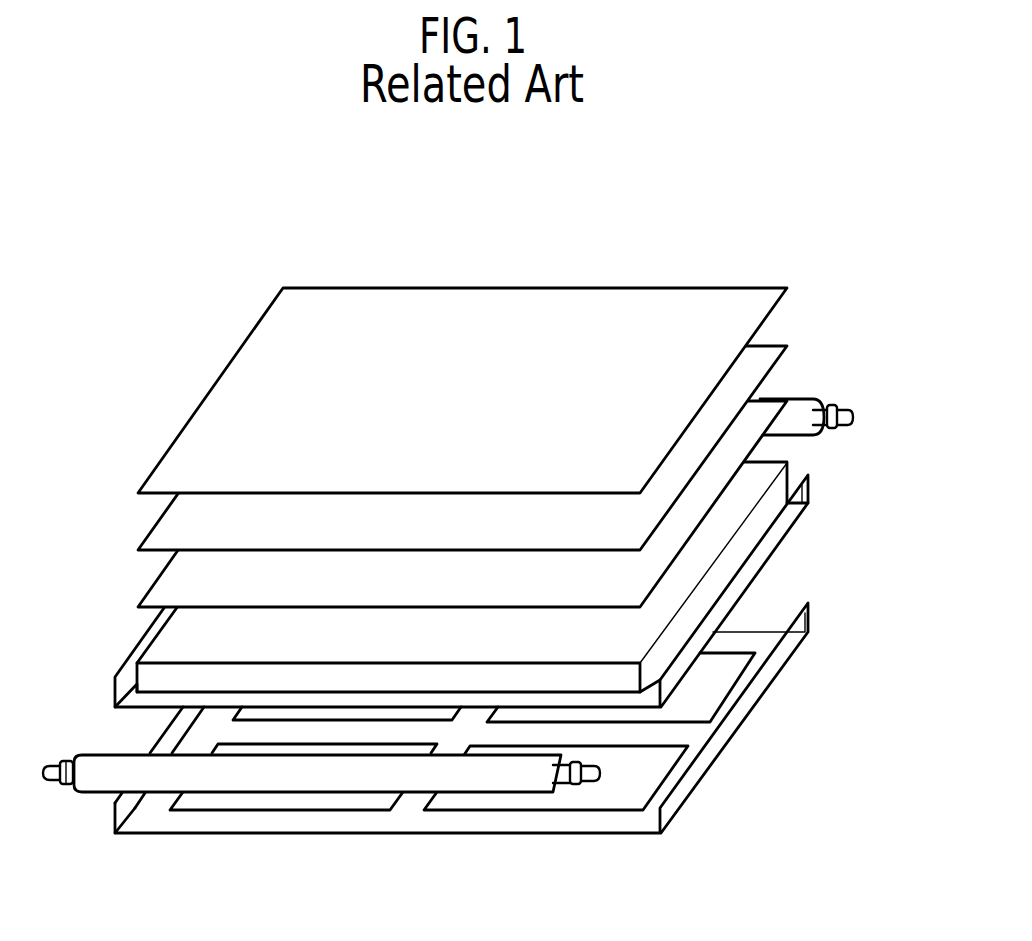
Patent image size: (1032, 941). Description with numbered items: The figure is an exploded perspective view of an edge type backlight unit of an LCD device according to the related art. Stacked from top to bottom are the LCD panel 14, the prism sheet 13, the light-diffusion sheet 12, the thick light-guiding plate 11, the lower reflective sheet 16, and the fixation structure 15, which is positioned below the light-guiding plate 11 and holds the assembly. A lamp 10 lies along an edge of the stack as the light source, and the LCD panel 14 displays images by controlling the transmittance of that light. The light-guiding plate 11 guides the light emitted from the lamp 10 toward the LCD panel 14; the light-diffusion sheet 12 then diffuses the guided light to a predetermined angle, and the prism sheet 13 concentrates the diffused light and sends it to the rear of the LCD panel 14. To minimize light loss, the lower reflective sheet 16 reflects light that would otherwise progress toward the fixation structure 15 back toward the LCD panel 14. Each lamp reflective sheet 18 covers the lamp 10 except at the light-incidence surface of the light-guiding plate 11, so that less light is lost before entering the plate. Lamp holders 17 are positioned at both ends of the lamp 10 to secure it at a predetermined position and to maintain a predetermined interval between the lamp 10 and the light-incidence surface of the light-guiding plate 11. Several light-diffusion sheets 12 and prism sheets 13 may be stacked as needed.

The lamp 10 is at (855, 414).
The light-guiding plate 11 is at (163, 642).
The light-diffusion sheet 12 is at (163, 589).
The prism sheet 13 is at (163, 531).
The LCD panel 14 is at (163, 473).
The fixation structure 15 is at (120, 812).
The lower reflective sheet 16 is at (120, 687).
The lamp holder 17 is at (835, 404).
The lamp reflective sheet 18 is at (802, 399).